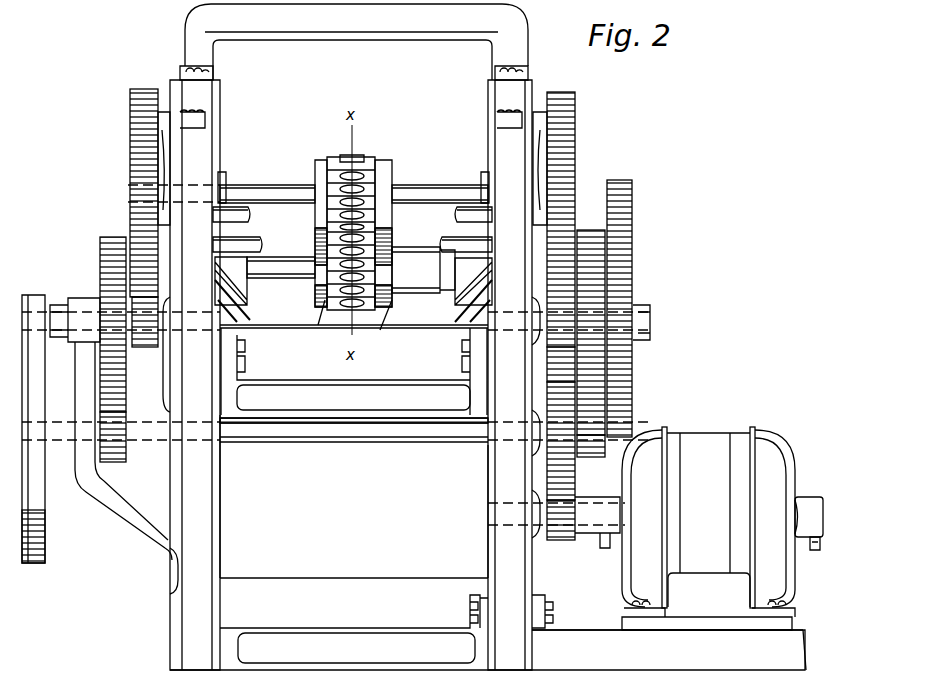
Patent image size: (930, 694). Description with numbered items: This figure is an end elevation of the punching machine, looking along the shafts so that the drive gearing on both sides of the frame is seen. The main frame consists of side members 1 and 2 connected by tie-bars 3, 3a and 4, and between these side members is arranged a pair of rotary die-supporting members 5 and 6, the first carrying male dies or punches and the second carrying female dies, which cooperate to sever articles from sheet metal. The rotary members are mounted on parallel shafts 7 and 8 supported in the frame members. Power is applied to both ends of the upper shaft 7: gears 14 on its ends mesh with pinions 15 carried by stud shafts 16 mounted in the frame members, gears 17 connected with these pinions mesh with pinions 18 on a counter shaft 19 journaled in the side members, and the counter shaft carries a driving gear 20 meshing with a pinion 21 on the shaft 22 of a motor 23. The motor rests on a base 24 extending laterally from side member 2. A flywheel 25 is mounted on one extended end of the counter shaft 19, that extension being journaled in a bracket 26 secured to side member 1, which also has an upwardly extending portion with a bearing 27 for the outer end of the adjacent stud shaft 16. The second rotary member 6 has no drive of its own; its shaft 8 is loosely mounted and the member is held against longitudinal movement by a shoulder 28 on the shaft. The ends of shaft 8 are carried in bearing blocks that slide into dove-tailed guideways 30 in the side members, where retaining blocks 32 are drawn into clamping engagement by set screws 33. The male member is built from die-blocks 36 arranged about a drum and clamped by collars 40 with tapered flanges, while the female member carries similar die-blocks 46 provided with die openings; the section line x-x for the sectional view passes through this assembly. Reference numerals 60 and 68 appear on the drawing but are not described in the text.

The side member 1 is at (186, 566).
The side member 2 is at (490, 548).
The tie-bar 3 is at (352, 28).
The tie-bar 3a is at (318, 400).
The tie-bar 4 is at (359, 642).
The rotary member 5 is at (394, 190).
The rotary member 6 is at (392, 290).
The upper shaft 7 is at (258, 190).
The shaft 8 is at (285, 270).
The gear 14 is at (140, 126).
The pinion 15 is at (144, 340).
The stud shaft 16 is at (200, 330).
The gear 17 is at (108, 252).
The pinion 18 is at (120, 445).
The counter shaft 19 is at (372, 440).
The driving gear 20 is at (548, 458).
The pinion 21 is at (560, 538).
The motor shaft 22 is at (490, 514).
The motor 23 is at (765, 460).
The base 24 is at (690, 672).
The flywheel 25 is at (45, 565).
The bracket 26 is at (137, 510).
The bearing 27 is at (78, 300).
The shoulder 28 is at (402, 325).
The guideway 30 is at (238, 310).
The retaining block 32 is at (247, 295).
The set screw 33 is at (258, 264).
The die-block 36 is at (372, 160).
The collar 40 is at (318, 215).
The die-block 46 is at (317, 326).
The lever 60 is at (150, 162).
The gear 68 is at (618, 180).